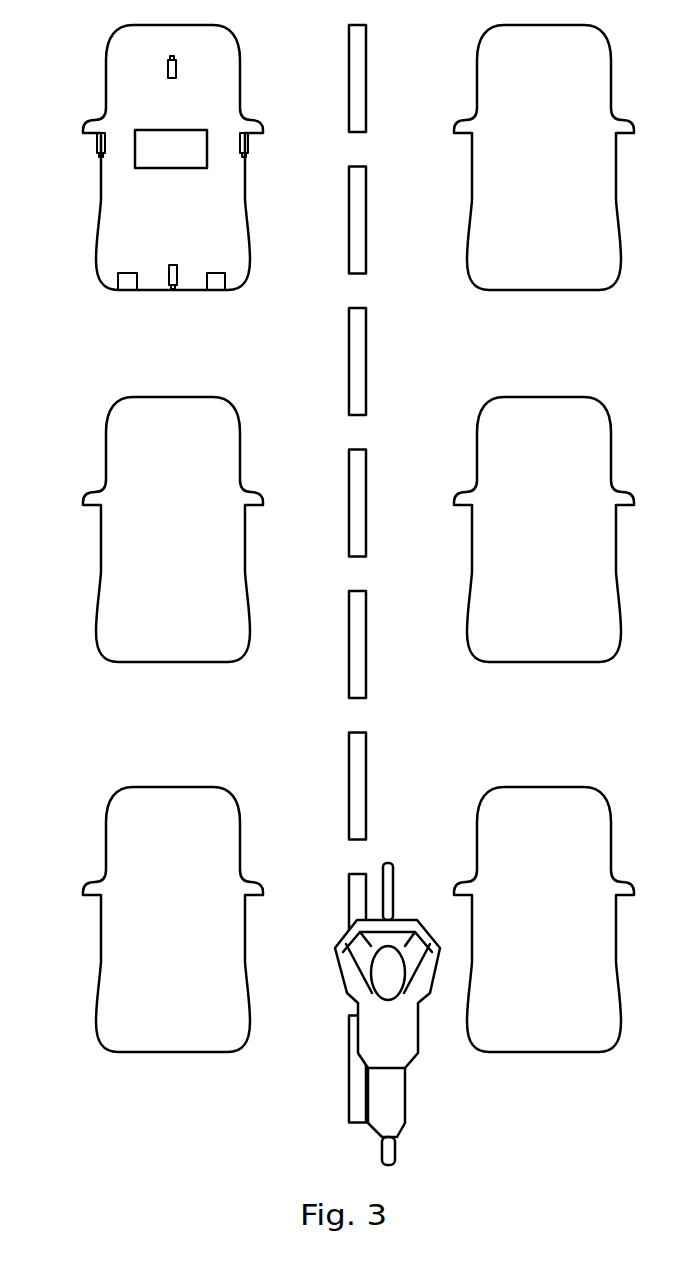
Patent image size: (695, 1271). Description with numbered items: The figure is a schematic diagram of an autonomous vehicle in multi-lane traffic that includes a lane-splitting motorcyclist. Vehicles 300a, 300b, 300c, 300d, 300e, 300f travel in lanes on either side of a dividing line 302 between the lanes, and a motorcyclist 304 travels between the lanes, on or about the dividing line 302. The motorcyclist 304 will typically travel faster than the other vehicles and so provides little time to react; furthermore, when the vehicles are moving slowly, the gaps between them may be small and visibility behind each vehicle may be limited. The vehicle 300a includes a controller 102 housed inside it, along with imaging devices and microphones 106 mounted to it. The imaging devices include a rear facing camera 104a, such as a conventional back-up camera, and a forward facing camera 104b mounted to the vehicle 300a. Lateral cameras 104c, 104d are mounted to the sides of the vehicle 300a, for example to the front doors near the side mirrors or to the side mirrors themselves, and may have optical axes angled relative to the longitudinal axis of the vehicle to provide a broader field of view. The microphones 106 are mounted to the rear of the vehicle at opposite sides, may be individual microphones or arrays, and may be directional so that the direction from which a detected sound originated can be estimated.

The controller 102 is at (157, 160).
The rear facing camera 104a is at (168, 266).
The forward facing camera 104b is at (165, 70).
The lateral camera 104c is at (97, 145).
The lateral camera 104d is at (248, 145).
The microphones 106 is at (118, 283).
The vehicle 300a is at (153, 290).
The vehicle 300b is at (532, 290).
The vehicle 300c is at (161, 662).
The vehicle 300d is at (532, 662).
The vehicle 300e is at (161, 1052).
The vehicle 300f is at (532, 1052).
The dividing line 302 is at (366, 343).
The motorcyclist 304 is at (405, 1105).